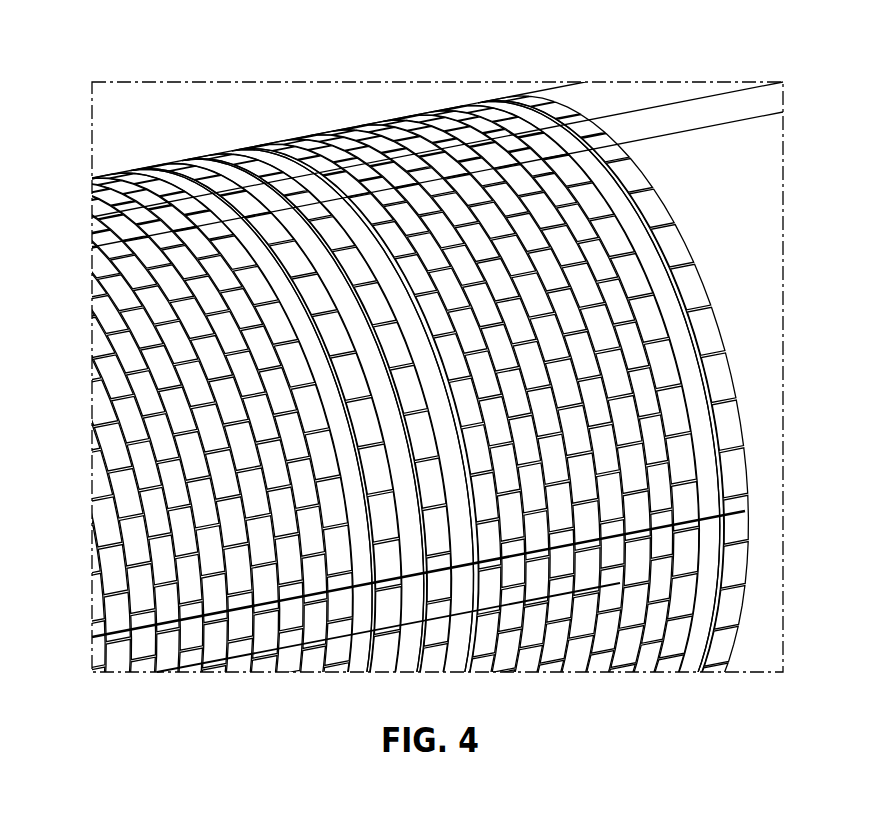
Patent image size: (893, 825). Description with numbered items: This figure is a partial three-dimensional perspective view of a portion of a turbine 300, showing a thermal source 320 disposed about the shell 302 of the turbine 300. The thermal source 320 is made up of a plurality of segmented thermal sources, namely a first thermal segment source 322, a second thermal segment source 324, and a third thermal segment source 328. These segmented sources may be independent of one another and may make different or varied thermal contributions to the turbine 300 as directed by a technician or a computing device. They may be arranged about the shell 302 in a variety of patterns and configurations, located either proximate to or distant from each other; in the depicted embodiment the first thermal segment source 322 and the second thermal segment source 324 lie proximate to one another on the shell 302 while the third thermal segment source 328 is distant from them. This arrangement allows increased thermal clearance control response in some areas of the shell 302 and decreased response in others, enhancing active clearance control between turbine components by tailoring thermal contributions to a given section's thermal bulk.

The turbine 300 is at (207, 52).
The shell 302 is at (727, 180).
The thermal source 320 is at (198, 505).
The first thermal segment source 322 is at (170, 375).
The second thermal segment source 324 is at (380, 512).
The third thermal segment source 328 is at (665, 120).